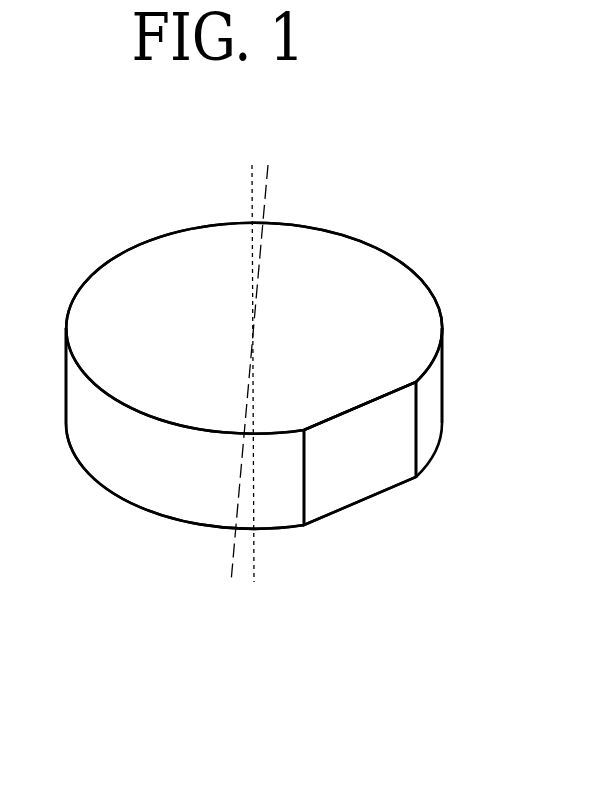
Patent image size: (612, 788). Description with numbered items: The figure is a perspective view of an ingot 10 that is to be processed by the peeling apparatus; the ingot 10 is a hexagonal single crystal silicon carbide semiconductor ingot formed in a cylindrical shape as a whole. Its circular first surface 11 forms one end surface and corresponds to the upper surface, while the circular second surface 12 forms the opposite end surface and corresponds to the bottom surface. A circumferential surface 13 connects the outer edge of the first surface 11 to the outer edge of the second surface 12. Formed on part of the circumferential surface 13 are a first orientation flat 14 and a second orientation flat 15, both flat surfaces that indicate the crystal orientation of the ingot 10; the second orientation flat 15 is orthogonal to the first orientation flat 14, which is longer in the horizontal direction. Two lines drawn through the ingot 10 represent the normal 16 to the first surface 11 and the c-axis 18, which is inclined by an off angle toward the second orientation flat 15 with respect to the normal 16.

The ingot 10 is at (414, 195).
The first surface 11 is at (135, 272).
The second surface 12 is at (150, 512).
The circumferential surface 13 is at (83, 410).
The first orientation flat 14 is at (363, 468).
The second orientation flat 15 is at (398, 265).
The normal 16 is at (250, 193).
The c-axis 18 is at (268, 177).